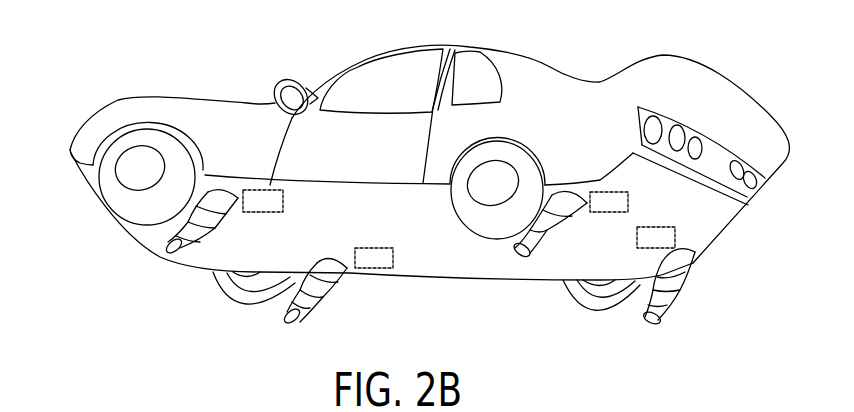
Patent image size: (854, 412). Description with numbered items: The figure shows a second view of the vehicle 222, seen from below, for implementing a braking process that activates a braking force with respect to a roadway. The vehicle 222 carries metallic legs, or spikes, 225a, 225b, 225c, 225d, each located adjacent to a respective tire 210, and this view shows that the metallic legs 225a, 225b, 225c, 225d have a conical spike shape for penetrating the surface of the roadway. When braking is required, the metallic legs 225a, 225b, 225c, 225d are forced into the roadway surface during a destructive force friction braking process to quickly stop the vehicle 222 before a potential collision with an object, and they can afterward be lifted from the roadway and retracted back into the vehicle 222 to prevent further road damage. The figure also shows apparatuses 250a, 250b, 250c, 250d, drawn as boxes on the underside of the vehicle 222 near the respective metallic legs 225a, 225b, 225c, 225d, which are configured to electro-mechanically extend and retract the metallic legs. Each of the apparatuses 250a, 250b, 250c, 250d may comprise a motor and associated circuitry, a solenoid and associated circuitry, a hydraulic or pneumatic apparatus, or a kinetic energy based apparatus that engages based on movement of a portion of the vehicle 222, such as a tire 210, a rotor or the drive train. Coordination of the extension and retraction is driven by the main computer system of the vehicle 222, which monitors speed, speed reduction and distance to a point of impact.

The tire 210 is at (128, 212).
The vehicle 222 is at (231, 103).
The metallic leg 225a is at (180, 240).
The metallic leg 225b is at (310, 310).
The metallic leg 225c is at (680, 280).
The metallic leg 225d is at (540, 240).
The apparatus 250a is at (283, 200).
The apparatus 250b is at (377, 262).
The apparatus 250c is at (637, 243).
The apparatus 250d is at (628, 202).